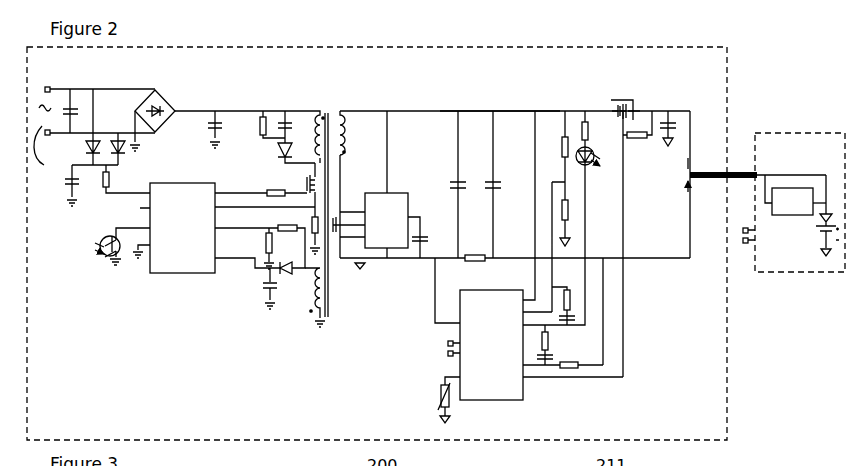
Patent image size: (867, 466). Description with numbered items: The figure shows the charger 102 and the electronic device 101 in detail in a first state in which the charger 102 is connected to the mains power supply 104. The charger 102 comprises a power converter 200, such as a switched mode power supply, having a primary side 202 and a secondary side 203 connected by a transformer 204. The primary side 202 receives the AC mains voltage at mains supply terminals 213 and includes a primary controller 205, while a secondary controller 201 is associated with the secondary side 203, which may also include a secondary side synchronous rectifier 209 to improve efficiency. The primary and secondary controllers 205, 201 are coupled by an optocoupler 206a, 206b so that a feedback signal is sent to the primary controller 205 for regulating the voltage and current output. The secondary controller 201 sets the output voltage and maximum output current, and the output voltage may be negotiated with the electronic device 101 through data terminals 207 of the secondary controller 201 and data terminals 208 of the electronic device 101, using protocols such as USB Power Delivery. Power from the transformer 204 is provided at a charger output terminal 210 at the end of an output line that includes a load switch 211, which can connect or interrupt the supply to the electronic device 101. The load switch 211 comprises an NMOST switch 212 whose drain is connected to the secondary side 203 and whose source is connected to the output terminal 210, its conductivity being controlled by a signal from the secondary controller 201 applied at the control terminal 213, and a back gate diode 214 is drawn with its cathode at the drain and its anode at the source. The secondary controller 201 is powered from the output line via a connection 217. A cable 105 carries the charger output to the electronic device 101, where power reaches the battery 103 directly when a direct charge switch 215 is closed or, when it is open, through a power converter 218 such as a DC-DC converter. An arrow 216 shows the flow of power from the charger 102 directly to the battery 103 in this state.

The electronic device 101 is at (763, 133).
The charger 102 is at (710, 46).
The battery 103 is at (813, 235).
The mains power supply 104 is at (55, 128).
The cable 105 is at (728, 170).
The power converter 200 is at (347, 75).
The secondary controller 201 is at (470, 402).
The primary side 202 is at (224, 106).
The secondary side 203 is at (471, 102).
The transformer 204 is at (326, 105).
The primary controller 205 is at (195, 273).
The optocoupler 206a is at (587, 177).
The optocoupler 206b is at (106, 258).
The data terminals 207 is at (447, 345).
The data terminals 208 is at (741, 240).
The secondary side synchronous rectifier 209 is at (402, 193).
The charger output terminal 210 is at (687, 177).
The load switch 211 is at (625, 73).
The NMOST switch 212 is at (611, 113).
The control terminal 213 is at (48, 88).
The back gate diode 214 is at (636, 111).
The direct charge switch 215 is at (800, 173).
The arrow 216 is at (498, 111).
The connection 217 is at (533, 186).
The power converter 218 is at (793, 216).